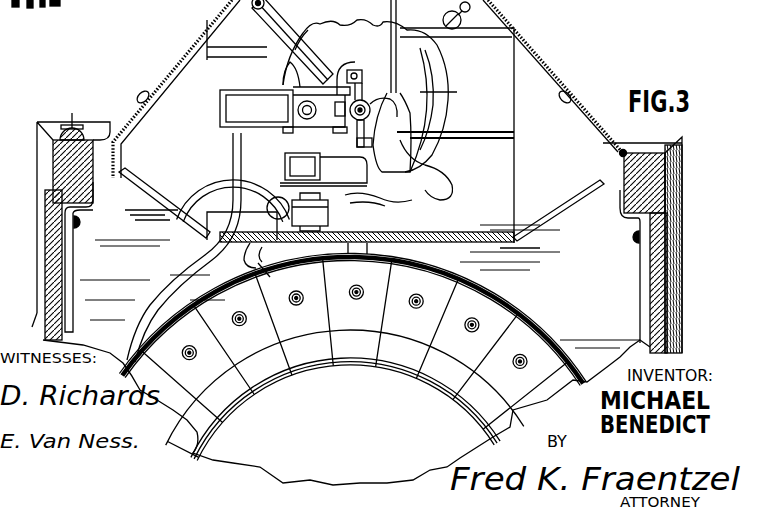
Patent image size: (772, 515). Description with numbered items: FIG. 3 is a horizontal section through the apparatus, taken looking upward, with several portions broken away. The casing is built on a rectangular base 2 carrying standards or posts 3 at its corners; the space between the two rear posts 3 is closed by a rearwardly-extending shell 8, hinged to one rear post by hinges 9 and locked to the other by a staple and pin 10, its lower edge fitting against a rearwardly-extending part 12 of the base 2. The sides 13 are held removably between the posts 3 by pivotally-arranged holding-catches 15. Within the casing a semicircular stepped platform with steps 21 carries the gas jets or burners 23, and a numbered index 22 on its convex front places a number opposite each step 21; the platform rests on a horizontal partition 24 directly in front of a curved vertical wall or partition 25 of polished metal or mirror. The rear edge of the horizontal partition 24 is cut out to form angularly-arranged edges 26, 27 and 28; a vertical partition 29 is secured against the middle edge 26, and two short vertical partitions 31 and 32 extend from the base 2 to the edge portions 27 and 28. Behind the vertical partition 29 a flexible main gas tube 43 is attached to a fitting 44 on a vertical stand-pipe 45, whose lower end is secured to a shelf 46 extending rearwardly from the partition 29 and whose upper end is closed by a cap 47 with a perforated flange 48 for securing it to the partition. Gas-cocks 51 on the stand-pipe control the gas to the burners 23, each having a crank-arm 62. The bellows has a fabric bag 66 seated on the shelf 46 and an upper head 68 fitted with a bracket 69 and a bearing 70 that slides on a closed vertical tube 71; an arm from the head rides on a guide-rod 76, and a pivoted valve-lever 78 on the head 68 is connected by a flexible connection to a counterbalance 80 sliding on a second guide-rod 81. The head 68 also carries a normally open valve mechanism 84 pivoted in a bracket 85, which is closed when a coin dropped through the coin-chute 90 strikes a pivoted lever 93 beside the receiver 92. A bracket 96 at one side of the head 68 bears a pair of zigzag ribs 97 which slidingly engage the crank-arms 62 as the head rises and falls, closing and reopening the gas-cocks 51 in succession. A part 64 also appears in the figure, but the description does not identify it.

The base 2 is at (43, 143).
The standards or posts 3 is at (53, 161).
The rearwardly-extending shell 8 is at (188, 50).
The hinges 9 is at (625, 150).
The staple and pin 10 is at (74, 126).
The rearwardly-extending part of the base 12 is at (148, 93).
The sides 13 is at (53, 233).
The holding-catches 15 is at (352, 201).
The steps 21 is at (378, 354).
The numbered index 22 is at (270, 372).
The gas jets or burners 23 is at (353, 326).
The horizontal partition 24 is at (360, 329).
The curved vertical wall or partition 25 is at (177, 320).
The middle edge 26 is at (470, 253).
The edge portion 27 is at (532, 240).
The edge portion 28 is at (151, 213).
The vertical partition 29 is at (462, 240).
The short vertical partition 31 is at (560, 204).
The short vertical partition 32 is at (148, 190).
The main gas tube or pipe 43 is at (218, 193).
The fitting 44 is at (258, 195).
The vertical stand-pipe 45 is at (268, 222).
The shelf 46 is at (360, 131).
The cap 47 is at (241, 255).
The perforated flange 48 is at (272, 279).
The gas-cock 51 is at (330, 218).
The crank-arms 62 is at (372, 206).
The hook link 64 is at (297, 242).
The bag 66 is at (443, 74).
The upper head 68 is at (450, 92).
The bracket 69 is at (336, 143).
The bearing 70 is at (446, 132).
The vertical tube 71 is at (400, 123).
The guide-rod 76 is at (251, 8).
The pivoted valve-lever 78 is at (393, 40).
The counterbalance 80 is at (451, 14).
The guide-rod 81 is at (470, 13).
The valve mechanism 84 is at (263, 92).
The bracket 85 is at (365, 96).
The coin-chute 90 is at (233, 150).
The receiver 92 is at (222, 92).
The lever 93 is at (257, 108).
The bracket 96 is at (426, 175).
The zigzag ribs 97 is at (323, 169).